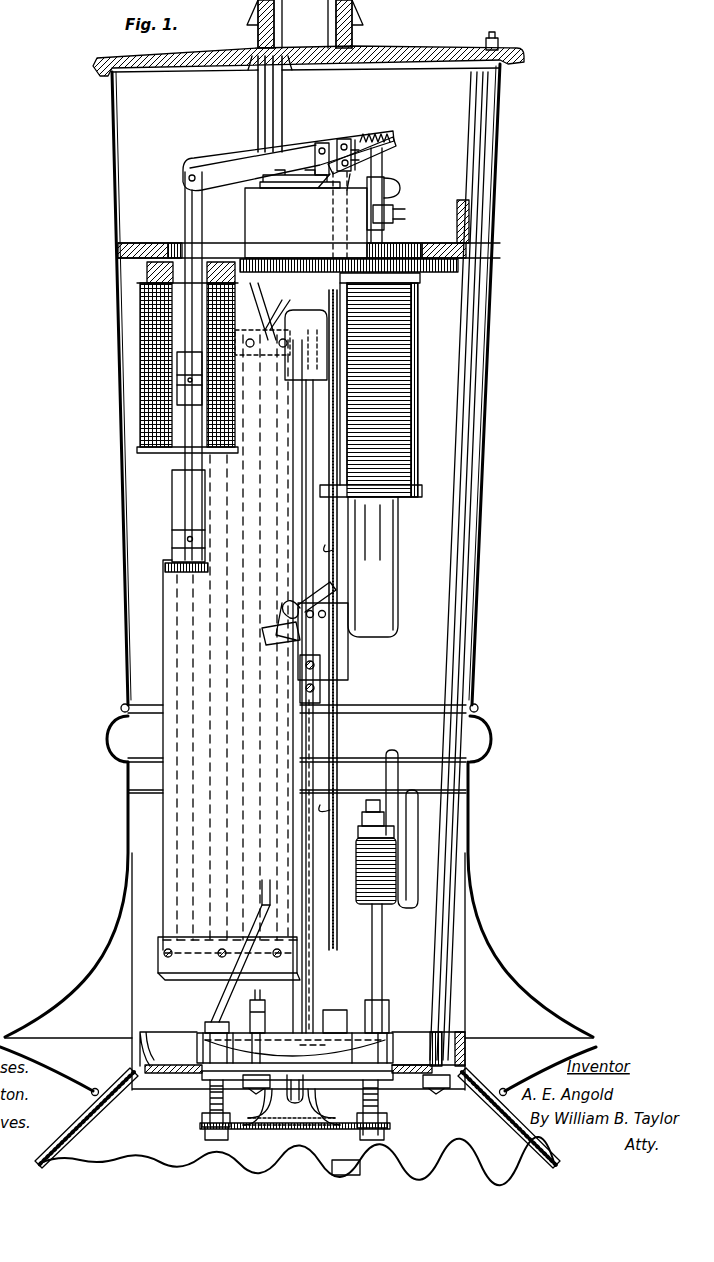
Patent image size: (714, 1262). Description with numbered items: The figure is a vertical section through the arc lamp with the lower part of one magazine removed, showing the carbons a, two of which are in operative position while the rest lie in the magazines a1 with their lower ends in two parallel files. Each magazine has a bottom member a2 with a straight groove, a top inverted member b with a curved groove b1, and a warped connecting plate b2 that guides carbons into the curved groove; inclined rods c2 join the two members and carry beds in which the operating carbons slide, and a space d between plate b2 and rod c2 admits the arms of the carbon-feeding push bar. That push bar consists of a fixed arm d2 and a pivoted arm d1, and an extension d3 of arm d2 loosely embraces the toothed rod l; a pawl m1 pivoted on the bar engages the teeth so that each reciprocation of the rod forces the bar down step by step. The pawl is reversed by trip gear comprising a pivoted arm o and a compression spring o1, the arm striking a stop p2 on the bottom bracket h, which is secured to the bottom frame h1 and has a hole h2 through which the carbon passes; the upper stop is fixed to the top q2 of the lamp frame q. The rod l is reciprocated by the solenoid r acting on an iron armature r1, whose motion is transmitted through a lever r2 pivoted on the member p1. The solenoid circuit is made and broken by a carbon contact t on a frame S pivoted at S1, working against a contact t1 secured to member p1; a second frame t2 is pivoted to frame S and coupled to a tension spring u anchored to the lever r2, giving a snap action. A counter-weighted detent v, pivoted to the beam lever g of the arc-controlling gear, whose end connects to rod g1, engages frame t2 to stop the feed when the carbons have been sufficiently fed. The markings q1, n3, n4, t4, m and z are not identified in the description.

The lamp frame q is at (100, 70).
The rods q1 is at (462, 640).
The top of the lamp frame q2 is at (248, 212).
The solenoid r is at (140, 370).
The iron armature r1 is at (172, 546).
The lever r2 is at (253, 165).
The member p1 is at (272, 238).
The stop p2 is at (262, 884).
The contact block n3 is at (329, 143).
The contact block n4 is at (315, 150).
The frame S is at (342, 136).
The pivot S1 is at (357, 140).
The spring u is at (375, 127).
The carbon contact t is at (321, 194).
The contact t1 is at (352, 189).
The second frame t2 is at (388, 150).
The rod t4 is at (333, 192).
The counter-weighted detent v is at (384, 195).
The beam lever g is at (362, 222).
The rod g1 is at (400, 222).
The top inverted member b is at (430, 318).
The curved groove b1 is at (272, 335).
The plate b2 is at (234, 660).
The space d is at (272, 845).
The pivoted arm d1 is at (293, 978).
The fixed arm d2 is at (320, 676).
The extension d3 is at (323, 641).
The toothed rod l is at (345, 396).
The nut m is at (338, 547).
The pawl m1 is at (316, 600).
The pivoted arm o is at (262, 632).
The spring o1 is at (280, 603).
The carbons a is at (170, 661).
The magazines a1 is at (170, 514).
The bottom member a2 is at (202, 975).
The inclined rod c2 is at (322, 750).
The electromagnet z is at (392, 852).
The base bracket h is at (190, 1046).
The bottom frame h1 is at (170, 1073).
The hole h2 is at (336, 1045).